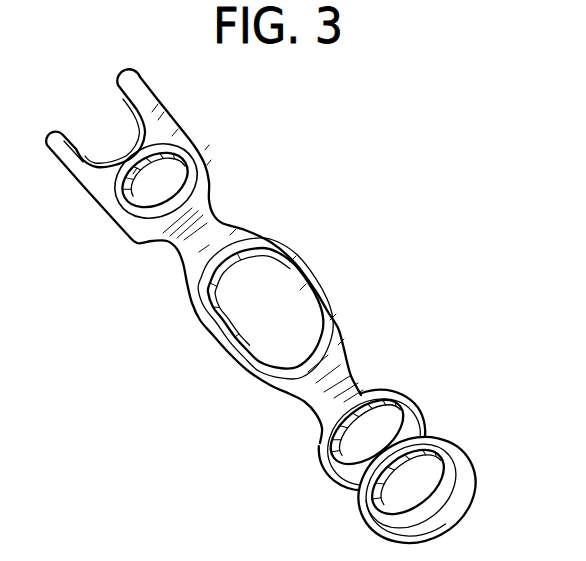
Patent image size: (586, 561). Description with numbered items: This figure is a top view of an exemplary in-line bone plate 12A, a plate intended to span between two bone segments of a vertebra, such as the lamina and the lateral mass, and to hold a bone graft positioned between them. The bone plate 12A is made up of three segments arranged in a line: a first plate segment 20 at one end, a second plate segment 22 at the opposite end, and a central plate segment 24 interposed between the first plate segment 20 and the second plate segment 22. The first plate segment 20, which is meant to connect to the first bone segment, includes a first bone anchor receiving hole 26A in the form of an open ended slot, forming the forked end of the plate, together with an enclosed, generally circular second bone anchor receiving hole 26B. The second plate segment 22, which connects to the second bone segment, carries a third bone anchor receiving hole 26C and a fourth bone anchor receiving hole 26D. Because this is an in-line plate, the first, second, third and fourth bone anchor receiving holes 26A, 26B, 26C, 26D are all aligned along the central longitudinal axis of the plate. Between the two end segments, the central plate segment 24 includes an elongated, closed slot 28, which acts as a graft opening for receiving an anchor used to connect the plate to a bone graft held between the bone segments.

The in-line bone plate 12A is at (280, 315).
The first plate segment 20 is at (181, 127).
The second plate segment 22 is at (418, 407).
The central plate segment 24 is at (326, 303).
The first bone anchor receiving hole 26A is at (92, 146).
The second bone anchor receiving hole 26B is at (148, 200).
The third bone anchor receiving hole 26C is at (381, 436).
The fourth bone anchor receiving hole 26D is at (420, 483).
The elongated closed slot 28 is at (259, 337).